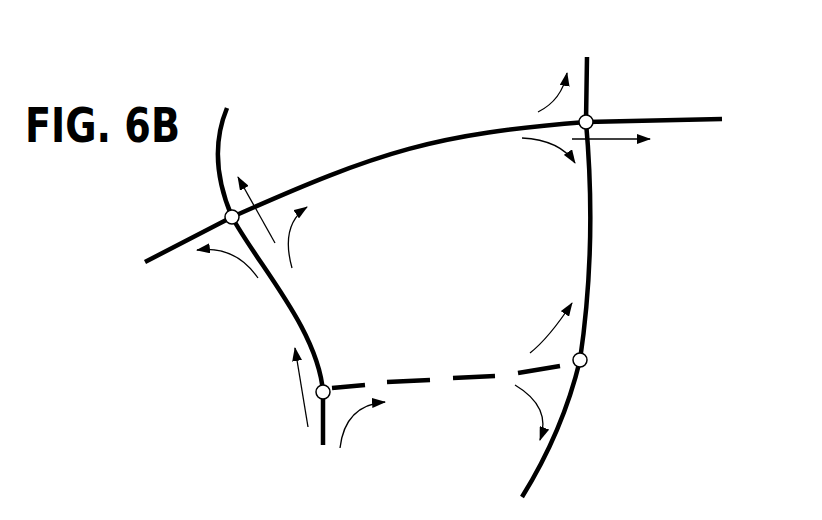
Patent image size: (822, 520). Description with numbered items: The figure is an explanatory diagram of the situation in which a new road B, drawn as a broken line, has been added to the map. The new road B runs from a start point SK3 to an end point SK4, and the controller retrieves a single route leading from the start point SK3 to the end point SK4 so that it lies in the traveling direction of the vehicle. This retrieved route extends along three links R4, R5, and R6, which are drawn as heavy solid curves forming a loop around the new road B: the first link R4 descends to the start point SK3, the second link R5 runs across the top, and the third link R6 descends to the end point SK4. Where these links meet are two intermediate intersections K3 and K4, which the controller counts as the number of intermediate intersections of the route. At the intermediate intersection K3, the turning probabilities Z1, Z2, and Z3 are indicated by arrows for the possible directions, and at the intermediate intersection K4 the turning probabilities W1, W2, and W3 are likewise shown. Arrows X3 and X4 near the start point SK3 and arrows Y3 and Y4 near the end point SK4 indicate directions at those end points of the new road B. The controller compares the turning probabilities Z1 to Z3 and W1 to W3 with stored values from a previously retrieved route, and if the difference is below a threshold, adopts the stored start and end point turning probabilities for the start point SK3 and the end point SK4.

The link R4 is at (287, 300).
The link R5 is at (388, 150).
The link R6 is at (592, 243).
The new road B is at (452, 385).
The intermediate intersection K3 is at (227, 215).
The intermediate intersection K4 is at (595, 113).
The start point SK3 is at (330, 381).
The end point SK4 is at (589, 356).
The turning probability Z1 is at (222, 270).
The turning probability Z2 is at (261, 203).
The turning probability Z3 is at (310, 237).
The turning probability W1 is at (535, 87).
The turning probability W2 is at (619, 157).
The turning probability W3 is at (548, 164).
The direction X3 is at (366, 429).
The direction X4 is at (284, 387).
The direction Y3 is at (548, 327).
The direction Y4 is at (520, 412).